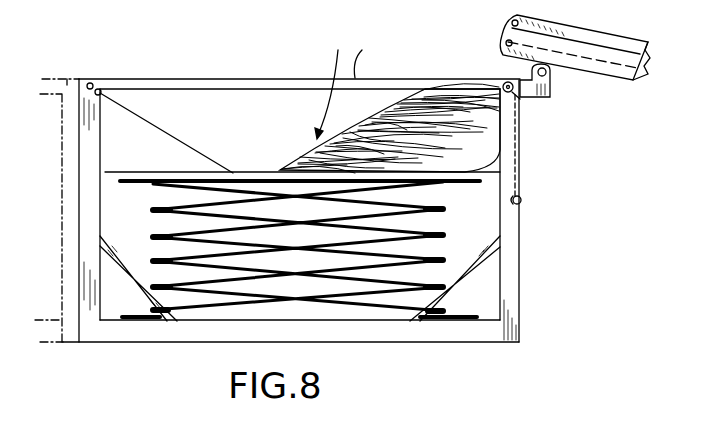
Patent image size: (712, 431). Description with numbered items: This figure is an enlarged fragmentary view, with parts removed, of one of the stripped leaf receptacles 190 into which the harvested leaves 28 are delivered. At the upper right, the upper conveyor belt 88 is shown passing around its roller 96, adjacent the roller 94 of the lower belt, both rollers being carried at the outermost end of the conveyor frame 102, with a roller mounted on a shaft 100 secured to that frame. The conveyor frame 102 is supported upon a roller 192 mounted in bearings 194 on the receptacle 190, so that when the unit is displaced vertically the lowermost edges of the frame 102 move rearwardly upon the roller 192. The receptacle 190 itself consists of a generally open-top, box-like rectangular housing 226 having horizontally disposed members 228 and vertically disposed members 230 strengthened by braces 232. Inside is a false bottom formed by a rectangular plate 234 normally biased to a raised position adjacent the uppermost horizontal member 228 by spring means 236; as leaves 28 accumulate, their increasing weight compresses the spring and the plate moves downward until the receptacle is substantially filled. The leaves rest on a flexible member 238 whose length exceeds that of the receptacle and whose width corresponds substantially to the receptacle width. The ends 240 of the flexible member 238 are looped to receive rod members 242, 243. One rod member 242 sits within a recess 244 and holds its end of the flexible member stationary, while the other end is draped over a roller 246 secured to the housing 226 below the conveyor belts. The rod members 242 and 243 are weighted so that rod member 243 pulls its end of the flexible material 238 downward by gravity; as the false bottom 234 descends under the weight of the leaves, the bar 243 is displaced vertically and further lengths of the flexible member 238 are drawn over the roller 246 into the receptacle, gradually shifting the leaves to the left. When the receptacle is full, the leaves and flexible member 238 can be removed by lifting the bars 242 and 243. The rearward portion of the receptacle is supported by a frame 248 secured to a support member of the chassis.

The stripped leaves 28 is at (448, 88).
The conveyor belt 88 is at (577, 25).
The roller 94 is at (503, 82).
The roller 96 is at (519, 22).
The shaft 100 is at (505, 43).
The conveyor frame 102 is at (636, 48).
The receptacle 190 is at (209, 75).
The roller 192 is at (547, 73).
The bearings 194 is at (551, 90).
The housing 226 is at (525, 277).
The horizontally disposed member 228 is at (407, 348).
The vertically disposed member 230 is at (517, 249).
The braces 232 is at (152, 297).
The rectangular plate 234 is at (116, 172).
The spring means 236 is at (157, 226).
The flexible member 238 is at (181, 139).
The ends 240 is at (101, 91).
The rod member 242 is at (78, 94).
The rod member 243 is at (520, 205).
The recess 244 is at (89, 80).
The roller 246 is at (524, 105).
The frame 248 is at (67, 79).